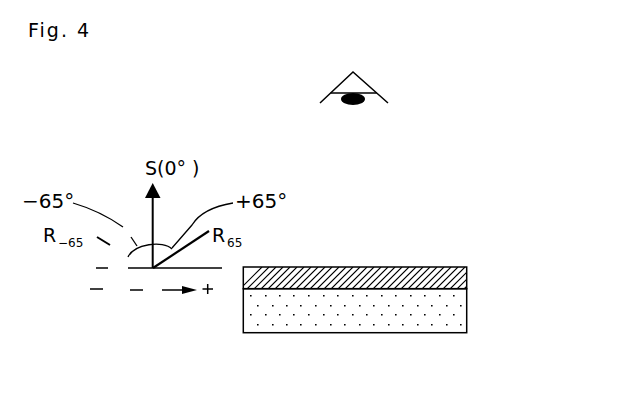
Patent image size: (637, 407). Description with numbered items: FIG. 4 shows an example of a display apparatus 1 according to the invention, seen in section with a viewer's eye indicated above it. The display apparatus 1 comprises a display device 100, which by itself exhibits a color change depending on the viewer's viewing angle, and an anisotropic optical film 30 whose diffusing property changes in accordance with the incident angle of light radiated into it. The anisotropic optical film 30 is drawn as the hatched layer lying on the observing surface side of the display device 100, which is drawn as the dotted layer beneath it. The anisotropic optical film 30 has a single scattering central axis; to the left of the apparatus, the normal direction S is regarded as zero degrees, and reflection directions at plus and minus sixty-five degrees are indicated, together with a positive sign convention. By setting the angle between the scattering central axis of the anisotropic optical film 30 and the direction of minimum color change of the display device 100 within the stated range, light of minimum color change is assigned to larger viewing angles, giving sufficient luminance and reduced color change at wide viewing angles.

The display apparatus 1 is at (394, 266).
The anisotropic optical film 30 is at (458, 275).
The display device 100 is at (458, 319).